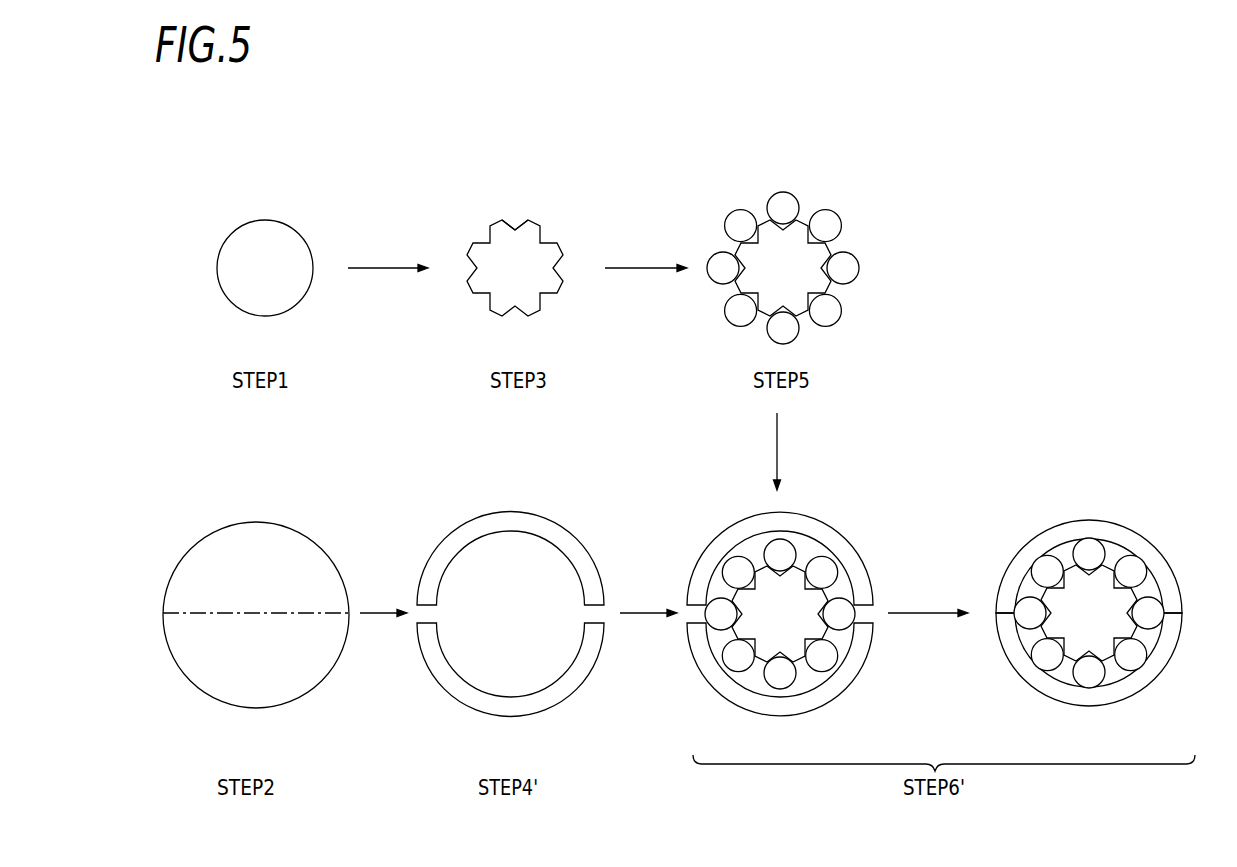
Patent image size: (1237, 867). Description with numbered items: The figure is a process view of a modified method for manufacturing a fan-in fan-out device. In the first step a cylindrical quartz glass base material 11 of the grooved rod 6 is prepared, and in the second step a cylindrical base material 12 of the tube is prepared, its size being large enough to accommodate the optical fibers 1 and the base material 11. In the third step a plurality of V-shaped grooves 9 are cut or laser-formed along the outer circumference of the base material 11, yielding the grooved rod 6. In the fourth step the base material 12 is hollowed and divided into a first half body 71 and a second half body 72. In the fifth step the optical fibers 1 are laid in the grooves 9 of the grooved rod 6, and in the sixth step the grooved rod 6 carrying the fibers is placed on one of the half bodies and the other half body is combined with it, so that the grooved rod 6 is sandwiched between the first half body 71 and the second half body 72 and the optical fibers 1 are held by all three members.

The optical fibers 1 is at (787, 192).
The grooved rod 6 is at (566, 212).
The V-shaped grooves 9 is at (514, 228).
The base material of the grooved rod 11 is at (233, 237).
The base material of the tube 12 is at (200, 538).
The first half body 71 is at (586, 549).
The second half body 72 is at (591, 677).